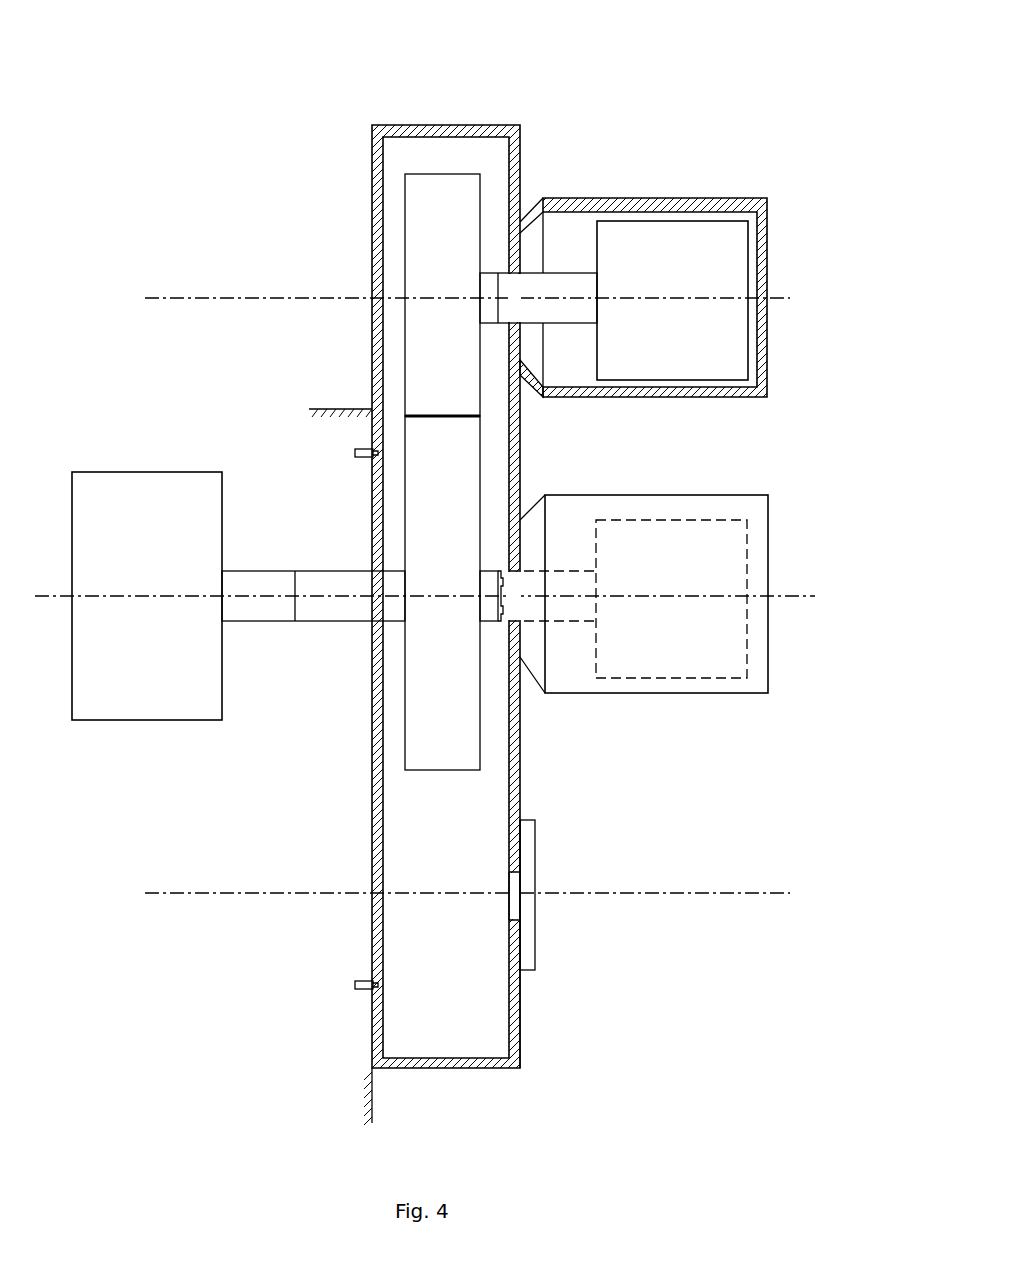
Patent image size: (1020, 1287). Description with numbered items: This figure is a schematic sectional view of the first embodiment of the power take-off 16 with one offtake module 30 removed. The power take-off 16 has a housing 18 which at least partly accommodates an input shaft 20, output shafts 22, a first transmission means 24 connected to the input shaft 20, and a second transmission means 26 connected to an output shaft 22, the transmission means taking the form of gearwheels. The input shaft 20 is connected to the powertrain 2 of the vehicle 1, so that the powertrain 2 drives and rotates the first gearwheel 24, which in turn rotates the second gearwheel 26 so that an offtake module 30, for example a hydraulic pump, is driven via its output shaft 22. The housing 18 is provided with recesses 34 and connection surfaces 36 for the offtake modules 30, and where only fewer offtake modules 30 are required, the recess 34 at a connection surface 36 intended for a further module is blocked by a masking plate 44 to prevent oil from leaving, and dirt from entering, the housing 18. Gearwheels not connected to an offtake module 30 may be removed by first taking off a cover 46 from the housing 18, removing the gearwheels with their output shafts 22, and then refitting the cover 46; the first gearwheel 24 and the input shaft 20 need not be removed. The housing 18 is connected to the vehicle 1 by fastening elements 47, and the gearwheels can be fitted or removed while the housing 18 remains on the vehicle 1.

The vehicle 1 is at (325, 409).
The powertrain 2 is at (130, 472).
The power take-off 16 is at (623, 60).
The housing 18 is at (372, 125).
The input shaft 20 is at (337, 568).
The output shaft 22 is at (492, 273).
The first transmission means 24 is at (400, 697).
The second transmission means 26 is at (410, 215).
The offtake module 30 is at (755, 198).
The recess 34 is at (520, 623).
The connection surface 36 is at (520, 670).
The masking plate 44 is at (535, 940).
The cover 46 is at (520, 1017).
The fastening element 47 is at (353, 453).